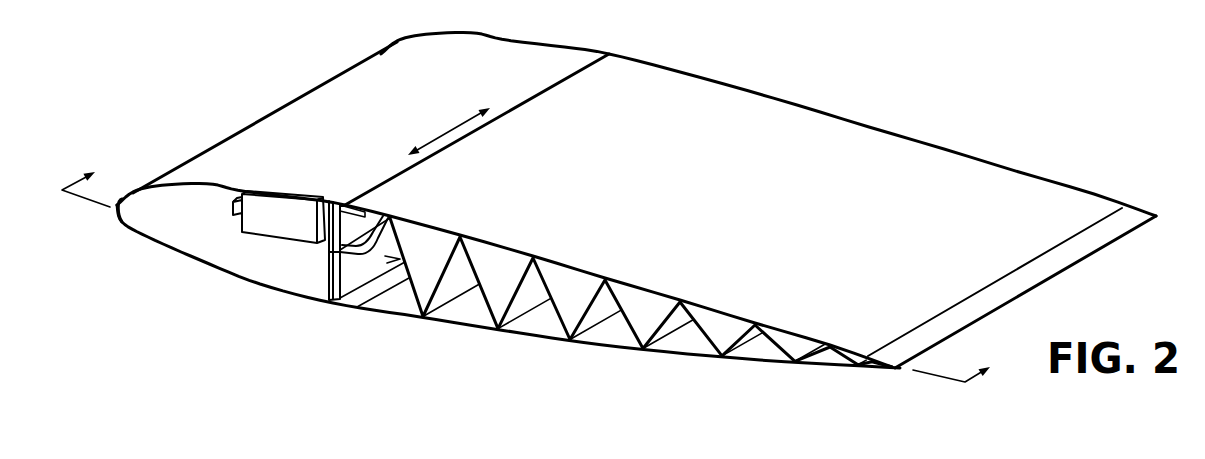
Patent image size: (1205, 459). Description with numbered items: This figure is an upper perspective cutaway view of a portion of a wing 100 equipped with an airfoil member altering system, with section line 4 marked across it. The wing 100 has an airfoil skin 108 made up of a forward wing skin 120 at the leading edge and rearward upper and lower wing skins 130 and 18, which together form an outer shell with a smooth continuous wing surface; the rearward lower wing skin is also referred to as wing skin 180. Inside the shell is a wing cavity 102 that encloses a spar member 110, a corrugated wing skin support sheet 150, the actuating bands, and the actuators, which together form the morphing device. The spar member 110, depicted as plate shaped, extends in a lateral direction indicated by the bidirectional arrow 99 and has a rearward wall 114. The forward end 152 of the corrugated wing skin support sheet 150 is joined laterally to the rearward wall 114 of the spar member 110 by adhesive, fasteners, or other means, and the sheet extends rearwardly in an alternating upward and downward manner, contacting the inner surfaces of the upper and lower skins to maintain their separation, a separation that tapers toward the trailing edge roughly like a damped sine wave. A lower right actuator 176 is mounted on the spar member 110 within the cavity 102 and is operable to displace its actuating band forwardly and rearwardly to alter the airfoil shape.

The wing 100 is at (182, 128).
The bidirectional arrow 99 is at (453, 125).
The rearward upper wing skin 130 is at (887, 112).
The airfoil skin 108 is at (958, 178).
The wing cavity 102 is at (185, 228).
The rearward lower wing skin 18 is at (683, 358).
The forward wing skin 120 is at (136, 245).
The lower right actuator 176 is at (283, 220).
The spar member 110 is at (318, 281).
The rearward wall 114 is at (348, 213).
The forward end 152 is at (388, 213).
The corrugated wing skin support sheet 150 is at (541, 323).
The rearward lower wing skin 180 is at (446, 333).
The section line 4- 4 is at (537, 272).